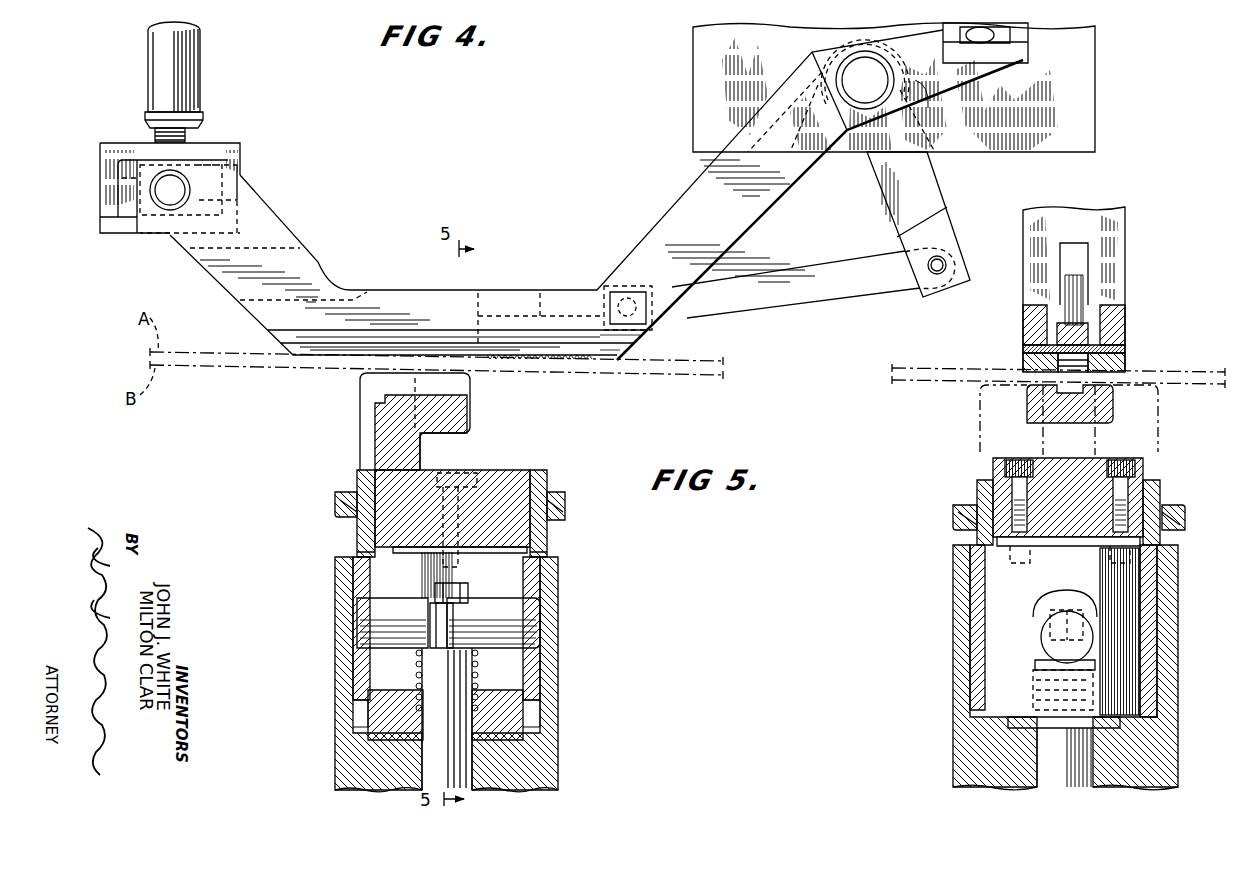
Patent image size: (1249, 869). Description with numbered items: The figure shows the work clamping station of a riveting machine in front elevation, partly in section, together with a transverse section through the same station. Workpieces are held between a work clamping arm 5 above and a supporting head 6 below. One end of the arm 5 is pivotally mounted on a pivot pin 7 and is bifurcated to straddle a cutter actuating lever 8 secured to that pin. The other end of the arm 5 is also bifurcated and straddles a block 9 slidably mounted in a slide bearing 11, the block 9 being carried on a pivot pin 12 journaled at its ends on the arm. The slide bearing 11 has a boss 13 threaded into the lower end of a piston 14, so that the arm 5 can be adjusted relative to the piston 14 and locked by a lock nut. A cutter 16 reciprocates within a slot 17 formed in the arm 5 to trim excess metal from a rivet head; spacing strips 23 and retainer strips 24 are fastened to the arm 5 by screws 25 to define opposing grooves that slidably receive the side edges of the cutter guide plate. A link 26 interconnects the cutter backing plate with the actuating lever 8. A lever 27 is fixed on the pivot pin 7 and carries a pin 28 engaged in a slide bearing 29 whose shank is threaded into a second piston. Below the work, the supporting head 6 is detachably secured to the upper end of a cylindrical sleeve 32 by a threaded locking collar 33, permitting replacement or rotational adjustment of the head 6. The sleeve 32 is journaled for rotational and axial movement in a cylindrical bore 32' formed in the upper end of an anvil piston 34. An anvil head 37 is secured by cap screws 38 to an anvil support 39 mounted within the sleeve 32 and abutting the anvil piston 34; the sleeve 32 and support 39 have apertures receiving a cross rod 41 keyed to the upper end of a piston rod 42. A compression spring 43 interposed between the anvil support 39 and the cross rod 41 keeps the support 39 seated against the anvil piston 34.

In FIG. 4, the work clamping arm 5 is at (326, 270).
In FIG. 5, the work clamping arm 5 is at (1030, 283).
In FIG. 4, the supporting head 6 is at (360, 406).
In FIG. 5, the supporting head 6 is at (979, 419).
In FIG. 4, the pivot pin 7 is at (848, 68).
In FIG. 4, the cutter actuating lever 8 is at (945, 205).
In FIG. 4, the block 9 is at (242, 193).
In FIG. 4, the slide bearing 11 is at (106, 156).
In FIG. 4, the pivot pin 12 is at (160, 188).
In FIG. 4, the boss 13 is at (186, 136).
In FIG. 4, the piston 14 is at (201, 68).
In FIG. 4, the cutter 16 is at (552, 300).
In FIG. 5, the cutter 16 is at (1086, 300).
In FIG. 5, the slot 17 is at (1084, 252).
In FIG. 4, the spacing strips 23 is at (636, 340).
In FIG. 5, the spacing strips 23 is at (1030, 348).
In FIG. 4, the retainer strips 24 is at (625, 357).
In FIG. 5, the retainer strips 24 is at (1030, 363).
In FIG. 5, the screws 25 is at (1028, 327).
In FIG. 4, the link 26 is at (806, 300).
In FIG. 4, the lever 27 is at (928, 108).
In FIG. 4, the pin 28 is at (1010, 35).
In FIG. 4, the slide bearing 29 is at (1023, 60).
In FIG. 4, the cylindrical sleeve 32 is at (481, 513).
In FIG. 5, the cylindrical sleeve 32 is at (1031, 518).
In FIG. 4, the cylindrical bore 32' is at (481, 628).
In FIG. 5, the cylindrical bore 32' is at (1030, 631).
In FIG. 4, the threaded locking collar 33 is at (566, 512).
In FIG. 5, the threaded locking collar 33 is at (953, 514).
In FIG. 4, the anvil piston 34 is at (558, 775).
In FIG. 5, the anvil piston 34 is at (953, 612).
In FIG. 4, the anvil head 37 is at (467, 423).
In FIG. 5, the anvil head 37 is at (1055, 424).
In FIG. 4, the cap screws 38 is at (470, 478).
In FIG. 5, the cap screws 38 is at (1020, 456).
In FIG. 4, the anvil support 39 is at (530, 718).
In FIG. 5, the anvil support 39 is at (1020, 619).
In FIG. 4, the cross rod 41 is at (530, 614).
In FIG. 5, the cross rod 41 is at (1043, 638).
In FIG. 4, the piston rod 42 is at (435, 668).
In FIG. 5, the piston rod 42 is at (1047, 775).
In FIG. 4, the compression spring 43 is at (478, 668).
In FIG. 5, the compression spring 43 is at (1033, 683).